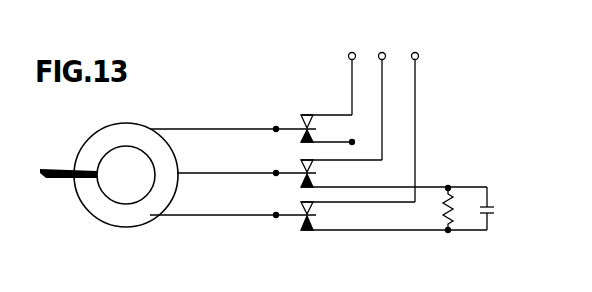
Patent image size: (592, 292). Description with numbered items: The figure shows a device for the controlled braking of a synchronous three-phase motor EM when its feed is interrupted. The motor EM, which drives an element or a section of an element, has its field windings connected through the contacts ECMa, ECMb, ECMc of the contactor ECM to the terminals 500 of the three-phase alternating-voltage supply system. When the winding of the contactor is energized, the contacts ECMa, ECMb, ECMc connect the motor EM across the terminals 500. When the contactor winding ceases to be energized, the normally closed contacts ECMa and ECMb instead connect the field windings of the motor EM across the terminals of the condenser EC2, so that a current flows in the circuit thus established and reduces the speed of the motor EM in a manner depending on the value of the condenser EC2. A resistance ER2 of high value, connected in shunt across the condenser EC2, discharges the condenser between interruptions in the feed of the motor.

The terminals 500 is at (422, 49).
The synchronous three-phase motor EM is at (109, 175).
The contact ECMa is at (306, 226).
The contact ECMb is at (308, 175).
The contact ECMc is at (303, 126).
The resistance ER2 is at (432, 220).
The condenser EC2 is at (494, 210).